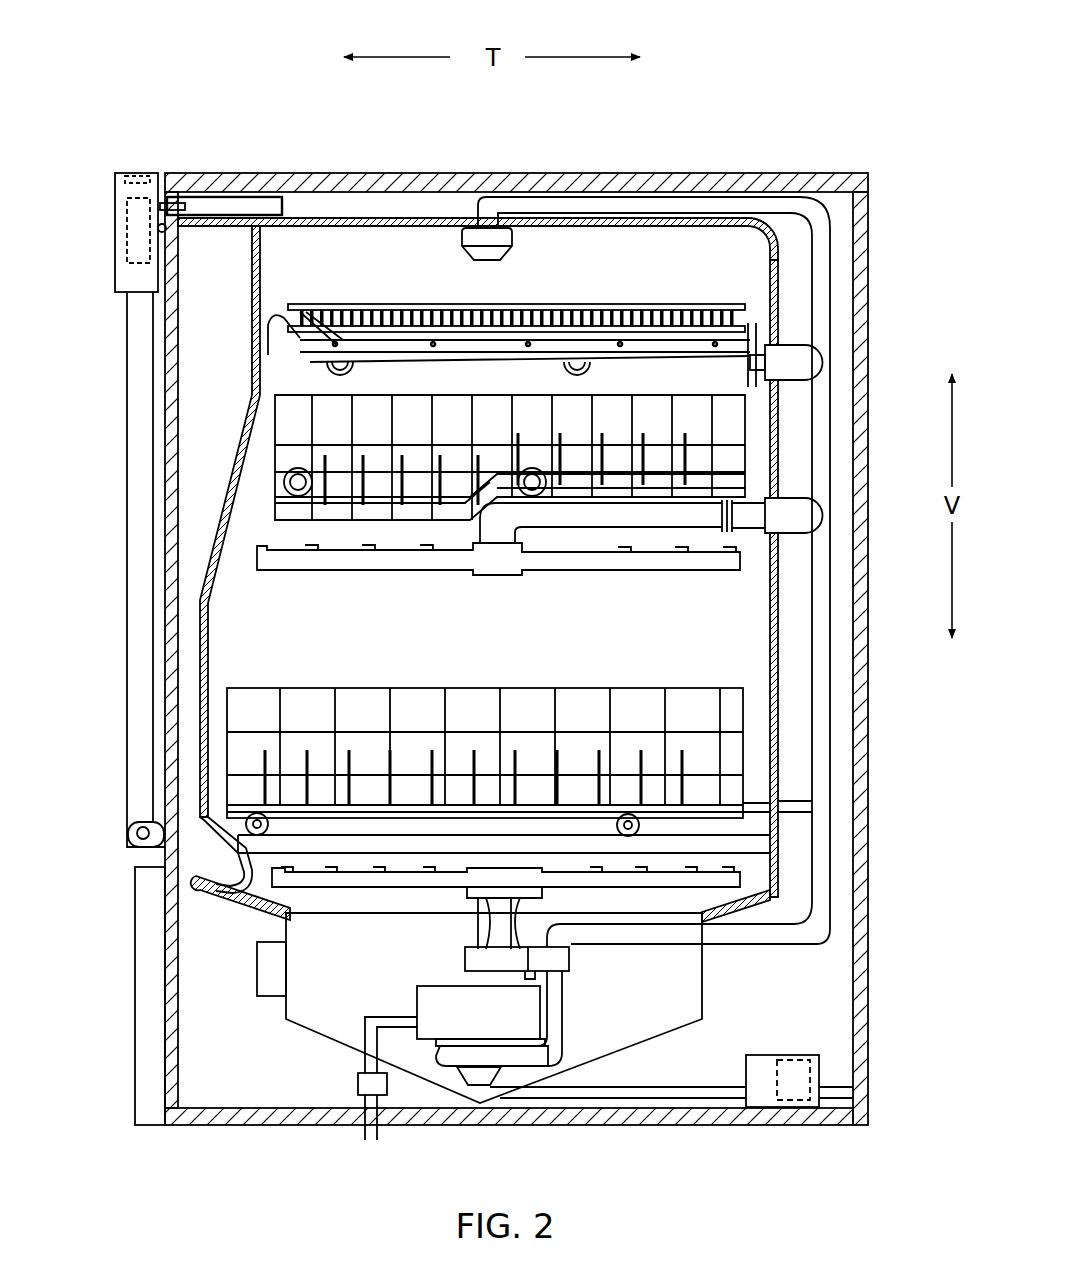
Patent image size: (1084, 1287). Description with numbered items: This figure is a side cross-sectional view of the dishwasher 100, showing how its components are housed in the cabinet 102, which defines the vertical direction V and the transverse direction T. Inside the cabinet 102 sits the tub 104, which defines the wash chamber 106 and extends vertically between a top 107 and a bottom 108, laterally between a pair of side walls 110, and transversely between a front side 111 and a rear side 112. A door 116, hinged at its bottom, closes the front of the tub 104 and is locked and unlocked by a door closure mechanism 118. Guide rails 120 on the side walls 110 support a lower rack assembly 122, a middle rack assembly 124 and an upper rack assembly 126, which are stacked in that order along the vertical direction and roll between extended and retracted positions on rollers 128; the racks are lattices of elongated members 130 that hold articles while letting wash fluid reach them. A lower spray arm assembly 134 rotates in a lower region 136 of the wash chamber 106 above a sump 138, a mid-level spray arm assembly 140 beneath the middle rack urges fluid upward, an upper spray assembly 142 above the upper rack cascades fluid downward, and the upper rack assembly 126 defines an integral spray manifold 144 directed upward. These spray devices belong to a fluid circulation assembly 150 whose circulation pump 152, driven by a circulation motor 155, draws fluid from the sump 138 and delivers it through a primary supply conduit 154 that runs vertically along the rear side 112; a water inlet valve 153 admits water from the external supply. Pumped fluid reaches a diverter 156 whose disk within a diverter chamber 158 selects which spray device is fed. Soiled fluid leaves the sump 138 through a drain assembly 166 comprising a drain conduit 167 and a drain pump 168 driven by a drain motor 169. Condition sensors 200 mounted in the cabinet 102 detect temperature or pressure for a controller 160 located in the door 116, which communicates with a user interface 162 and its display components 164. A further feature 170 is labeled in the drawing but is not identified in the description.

The dishwasher 100 is at (696, 84).
The cabinet 102 is at (869, 233).
The tub 104 is at (345, 635).
The wash chamber 106 is at (248, 614).
The top 107 is at (400, 236).
The bottom 108 is at (772, 880).
The side walls 110 is at (440, 257).
The front side 111 is at (268, 252).
The rear side 112 is at (762, 340).
The door 116 is at (127, 698).
The door closure mechanism 118 is at (259, 194).
The guide rails 120 is at (392, 376).
The lower rack assembly 122 is at (652, 688).
The middle rack assembly 124 is at (280, 382).
The upper rack assembly 126 is at (396, 300).
The rollers 128 is at (338, 372).
The elongated members 130 is at (732, 468).
The lower spray arm assembly 134 is at (652, 882).
The lower region 136 is at (754, 826).
The sump 138 is at (298, 1022).
The mid-level spray arm assembly 140 is at (540, 565).
The upper spray assembly 142 is at (506, 257).
The integral spray manifold 144 is at (668, 358).
The fluid circulation assembly 150 is at (402, 998).
The circulation pump 152 is at (522, 1008).
The water inlet valve 153 is at (360, 1093).
The primary supply conduit 154 is at (822, 710).
The circulation motor 155 is at (486, 1080).
The diverter 156 is at (455, 958).
The diverter chamber 158 is at (562, 959).
The controller 160 is at (124, 244).
The user interface 162 is at (128, 168).
The display components 164 is at (139, 168).
The drain assembly 166 is at (882, 1090).
The drain conduit 167 is at (652, 1100).
The drain pump 168 is at (763, 1055).
The drain motor 169 is at (801, 1110).
The tub lip 170 is at (195, 882).
The condition sensors 200 is at (256, 976).